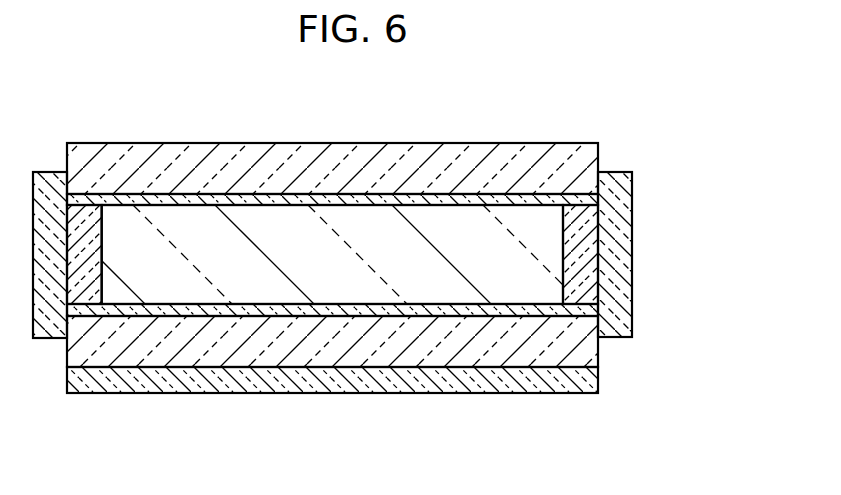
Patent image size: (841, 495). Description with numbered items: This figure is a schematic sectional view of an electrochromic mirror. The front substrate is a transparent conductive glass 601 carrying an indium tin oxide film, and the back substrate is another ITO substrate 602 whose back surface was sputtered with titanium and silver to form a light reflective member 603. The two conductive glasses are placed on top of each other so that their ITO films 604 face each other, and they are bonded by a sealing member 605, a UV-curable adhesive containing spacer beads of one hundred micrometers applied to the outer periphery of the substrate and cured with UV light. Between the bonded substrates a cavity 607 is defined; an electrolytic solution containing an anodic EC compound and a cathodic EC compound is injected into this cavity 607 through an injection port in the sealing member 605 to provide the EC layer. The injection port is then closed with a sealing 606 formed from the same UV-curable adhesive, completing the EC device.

The transparent conductive glass 601 is at (482, 155).
The ITO substrate 602 is at (577, 347).
The light reflective member 603 is at (380, 372).
The ITO films 604 is at (520, 198).
The sealing member 605 is at (587, 288).
The sealing 606 is at (622, 258).
The cavity 607 is at (536, 245).